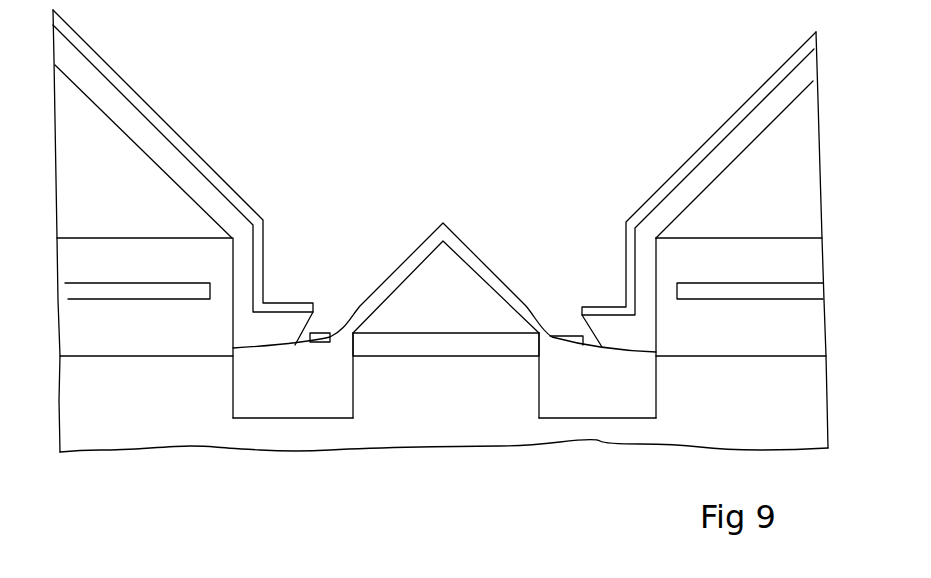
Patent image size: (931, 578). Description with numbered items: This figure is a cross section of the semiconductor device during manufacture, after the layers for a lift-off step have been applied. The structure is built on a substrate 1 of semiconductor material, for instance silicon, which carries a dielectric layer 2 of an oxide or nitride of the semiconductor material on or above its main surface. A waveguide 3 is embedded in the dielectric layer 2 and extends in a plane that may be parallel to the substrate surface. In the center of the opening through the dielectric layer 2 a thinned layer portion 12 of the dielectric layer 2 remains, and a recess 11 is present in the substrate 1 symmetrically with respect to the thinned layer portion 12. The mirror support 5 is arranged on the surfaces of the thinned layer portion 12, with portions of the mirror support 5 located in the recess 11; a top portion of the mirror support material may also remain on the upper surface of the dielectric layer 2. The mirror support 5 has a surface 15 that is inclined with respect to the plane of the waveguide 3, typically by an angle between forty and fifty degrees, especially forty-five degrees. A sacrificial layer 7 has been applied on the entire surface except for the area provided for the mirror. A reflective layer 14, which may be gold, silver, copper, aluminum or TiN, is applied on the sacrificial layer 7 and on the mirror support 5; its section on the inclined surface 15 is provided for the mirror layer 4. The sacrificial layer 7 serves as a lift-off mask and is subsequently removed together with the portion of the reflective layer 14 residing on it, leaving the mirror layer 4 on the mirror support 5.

The substrate 1 is at (160, 433).
The dielectric layer 2 is at (132, 345).
The waveguide 3 is at (147, 290).
The mirror layer 4 is at (487, 270).
The mirror support 5 is at (328, 373).
The sacrificial layer 7 is at (228, 193).
The recess 11 is at (307, 422).
The thinned layer portion 12 is at (440, 347).
The reflective layer 14 is at (262, 247).
The surface 15 is at (117, 117).